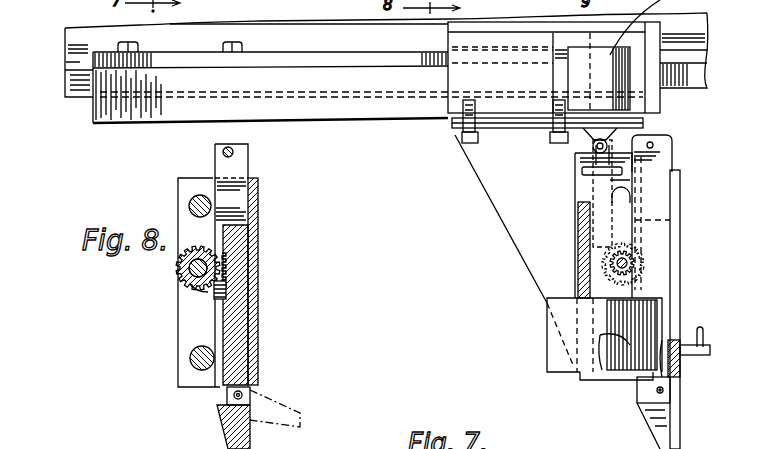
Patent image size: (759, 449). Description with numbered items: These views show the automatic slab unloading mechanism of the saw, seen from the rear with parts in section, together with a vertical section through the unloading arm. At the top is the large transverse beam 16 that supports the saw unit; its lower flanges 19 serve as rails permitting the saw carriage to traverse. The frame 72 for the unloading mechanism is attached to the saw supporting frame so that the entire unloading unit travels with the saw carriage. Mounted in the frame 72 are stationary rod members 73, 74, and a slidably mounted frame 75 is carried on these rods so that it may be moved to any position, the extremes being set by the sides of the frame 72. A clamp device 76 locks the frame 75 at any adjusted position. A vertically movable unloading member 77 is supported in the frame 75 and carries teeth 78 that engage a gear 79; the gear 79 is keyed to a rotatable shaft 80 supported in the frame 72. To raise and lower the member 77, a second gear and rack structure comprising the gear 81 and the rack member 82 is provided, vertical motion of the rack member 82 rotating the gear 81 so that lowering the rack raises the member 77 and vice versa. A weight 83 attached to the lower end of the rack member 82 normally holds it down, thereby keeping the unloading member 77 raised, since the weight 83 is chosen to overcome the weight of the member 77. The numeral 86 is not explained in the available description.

In FIG. 7, the transverse beam 16 is at (75, 30).
In FIG. 7, the lower flanges 19 is at (65, 80).
In FIG. 7, the frame 72 is at (513, 200).
In FIG. 7, the stationary rod member 73 is at (630, 197).
In FIG. 8, the stationary rod member 73 is at (189, 205).
In FIG. 7, the stationary rod member 74 is at (600, 378).
In FIG. 8, the stationary rod member 74 is at (190, 359).
In FIG. 7, the slidably mounted frame 75 is at (678, 184).
In FIG. 8, the slidably mounted frame 75 is at (177, 184).
In FIG. 7, the clamp device 76 is at (710, 352).
In FIG. 7, the vertically movable member 77 is at (668, 148).
In FIG. 8, the vertically movable member 77 is at (227, 289).
In FIG. 8, the teeth 78 is at (227, 282).
In FIG. 8, the gear 79 is at (178, 268).
In FIG. 8, the rotatable shaft 80 is at (183, 290).
In FIG. 7, the gear 81 is at (632, 258).
In FIG. 7, the rack member 82 is at (607, 228).
In FIG. 7, the weight 83 is at (547, 357).
In FIG. 7, the foot 86 is at (663, 430).
In FIG. 8, the foot 86 is at (222, 430).